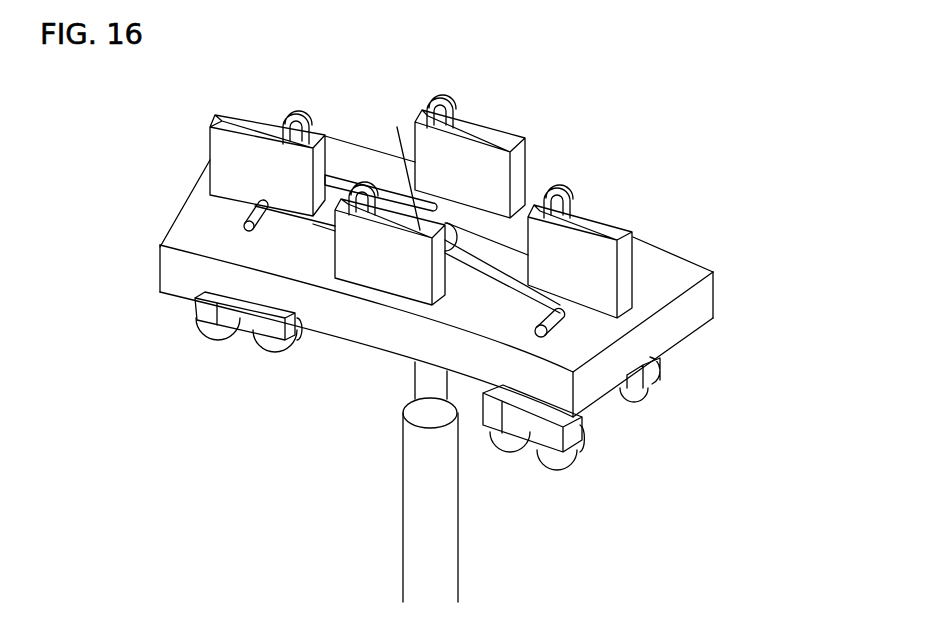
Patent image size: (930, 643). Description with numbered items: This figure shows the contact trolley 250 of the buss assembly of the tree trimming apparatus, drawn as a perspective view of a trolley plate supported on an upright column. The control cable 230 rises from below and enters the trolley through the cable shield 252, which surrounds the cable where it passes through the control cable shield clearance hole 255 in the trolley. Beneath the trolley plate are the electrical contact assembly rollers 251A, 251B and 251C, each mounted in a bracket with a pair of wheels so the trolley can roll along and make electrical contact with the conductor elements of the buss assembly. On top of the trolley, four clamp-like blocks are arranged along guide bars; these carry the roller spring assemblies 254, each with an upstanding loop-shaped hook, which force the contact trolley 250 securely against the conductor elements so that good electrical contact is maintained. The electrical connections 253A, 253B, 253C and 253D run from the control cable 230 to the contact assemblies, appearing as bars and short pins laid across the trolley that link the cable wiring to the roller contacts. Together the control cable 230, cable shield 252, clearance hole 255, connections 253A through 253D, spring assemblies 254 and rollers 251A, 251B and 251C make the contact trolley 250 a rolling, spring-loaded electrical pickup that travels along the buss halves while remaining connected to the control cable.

The control cable 230 is at (415, 526).
The contact trolley 250 is at (378, 327).
The electrical contact assembly roller 251A is at (633, 402).
The electrical contact assembly roller 251B is at (527, 428).
The electrical contact assembly roller 251C is at (257, 340).
The cable shield 252 is at (422, 387).
The electrical connection 253A is at (508, 242).
The electrical connection 253B is at (560, 313).
The electrical connection 253C is at (297, 220).
The electrical connection 253D is at (334, 180).
The roller spring assembly 254 is at (283, 113).
The control cable shield clearance hole 255 is at (443, 230).